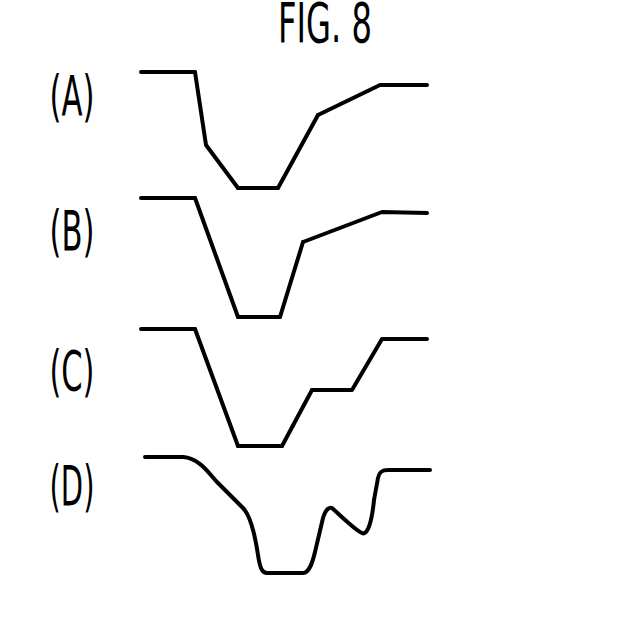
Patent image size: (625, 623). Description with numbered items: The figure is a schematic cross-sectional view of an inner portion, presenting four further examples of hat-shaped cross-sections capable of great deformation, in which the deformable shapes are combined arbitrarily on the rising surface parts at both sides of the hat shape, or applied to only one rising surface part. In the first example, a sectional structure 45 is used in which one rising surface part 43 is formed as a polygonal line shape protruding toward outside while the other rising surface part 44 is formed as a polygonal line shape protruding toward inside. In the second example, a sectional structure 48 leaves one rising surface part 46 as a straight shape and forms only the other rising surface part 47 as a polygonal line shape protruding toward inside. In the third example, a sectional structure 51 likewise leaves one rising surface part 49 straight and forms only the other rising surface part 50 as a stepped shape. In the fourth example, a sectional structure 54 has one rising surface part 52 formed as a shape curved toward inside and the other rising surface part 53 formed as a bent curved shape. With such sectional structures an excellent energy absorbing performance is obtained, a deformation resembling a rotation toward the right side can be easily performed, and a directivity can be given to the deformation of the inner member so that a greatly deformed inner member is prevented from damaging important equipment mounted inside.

The rising surface part 43 is at (203, 122).
The rising surface part 44 is at (298, 153).
The sectional structure 45 is at (310, 130).
The rising surface part 46 is at (212, 252).
The rising surface part 47 is at (295, 287).
The sectional structure 48 is at (308, 257).
The rising surface part 49 is at (213, 387).
The rising surface part 50 is at (298, 420).
The sectional structure 51 is at (306, 387).
The rising surface part 52 is at (218, 483).
The rising surface part 53 is at (380, 513).
The sectional structure 54 is at (319, 515).